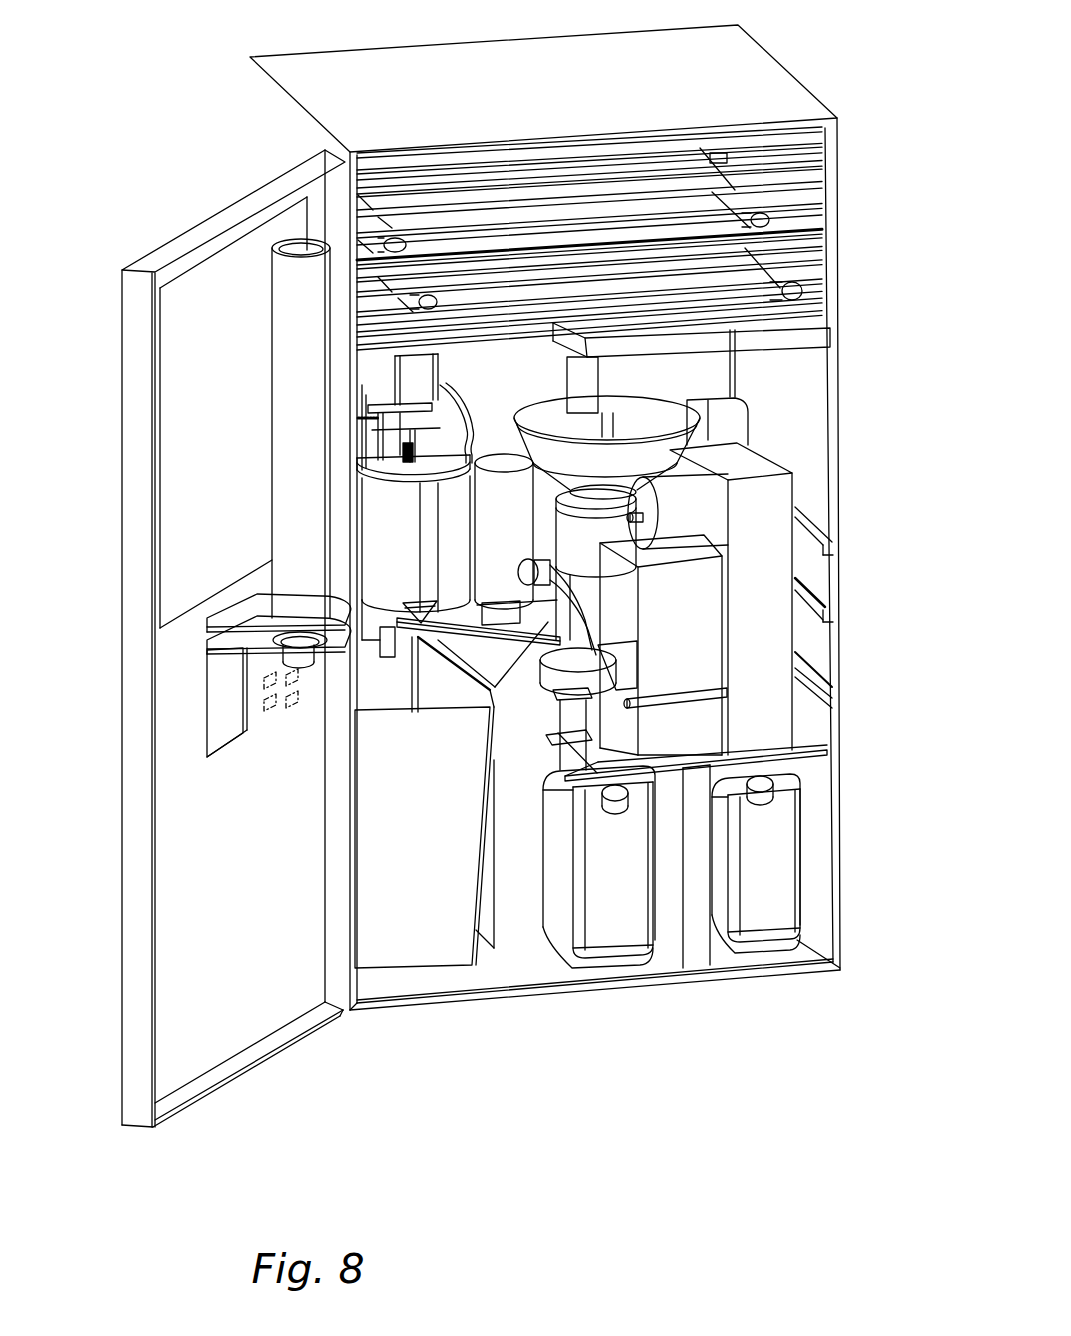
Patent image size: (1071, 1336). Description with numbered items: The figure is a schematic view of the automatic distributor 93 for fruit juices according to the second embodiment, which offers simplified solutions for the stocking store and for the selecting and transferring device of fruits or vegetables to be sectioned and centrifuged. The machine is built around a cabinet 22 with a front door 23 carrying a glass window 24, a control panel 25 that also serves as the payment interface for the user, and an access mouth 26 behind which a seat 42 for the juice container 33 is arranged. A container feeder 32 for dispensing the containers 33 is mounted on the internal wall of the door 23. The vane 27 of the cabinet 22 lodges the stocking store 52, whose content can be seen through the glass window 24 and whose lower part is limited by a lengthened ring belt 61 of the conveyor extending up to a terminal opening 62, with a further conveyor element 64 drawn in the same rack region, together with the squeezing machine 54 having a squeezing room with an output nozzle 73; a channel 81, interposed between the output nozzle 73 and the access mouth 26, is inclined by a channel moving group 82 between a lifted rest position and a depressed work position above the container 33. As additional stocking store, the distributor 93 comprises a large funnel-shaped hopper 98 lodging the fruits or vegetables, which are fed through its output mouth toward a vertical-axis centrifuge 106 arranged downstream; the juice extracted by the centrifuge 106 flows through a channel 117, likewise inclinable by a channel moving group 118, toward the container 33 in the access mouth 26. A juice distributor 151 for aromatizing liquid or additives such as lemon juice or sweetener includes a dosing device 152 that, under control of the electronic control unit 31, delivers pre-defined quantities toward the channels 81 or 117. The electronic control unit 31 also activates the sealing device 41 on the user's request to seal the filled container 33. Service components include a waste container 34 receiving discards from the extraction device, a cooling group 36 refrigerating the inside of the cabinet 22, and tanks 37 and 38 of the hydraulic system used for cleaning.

The automatic distributor 93 is at (163, 78).
The cabinet 22 is at (793, 61).
The front door 23 is at (178, 245).
The glass window 24 is at (172, 405).
The control panel 25 is at (268, 718).
The access mouth 26 is at (220, 700).
The vane 27 is at (822, 780).
The electronic control unit 31 is at (822, 337).
The container feeder 32 is at (250, 390).
The juice container 33 is at (305, 652).
The waste container 34 is at (405, 942).
The cooling group 36 is at (518, 872).
The tank 37 is at (795, 898).
The tank 38 is at (598, 975).
The sealing device 41 is at (795, 482).
The seat 42 is at (593, 668).
The stocking store 52 is at (598, 190).
The squeezing machine 54 is at (472, 401).
The ring belt 61 is at (395, 240).
The terminal opening 62 is at (770, 190).
The roller 64 is at (818, 255).
The output nozzle 73 is at (418, 603).
The channel 81 is at (500, 662).
The channel moving group 82 is at (375, 656).
The hopper 98 is at (590, 413).
The centrifuge 106 is at (795, 430).
The channel 117 is at (603, 612).
The channel moving group 118 is at (527, 552).
The juice distributor 151 is at (490, 503).
The dosing device 152 is at (518, 572).